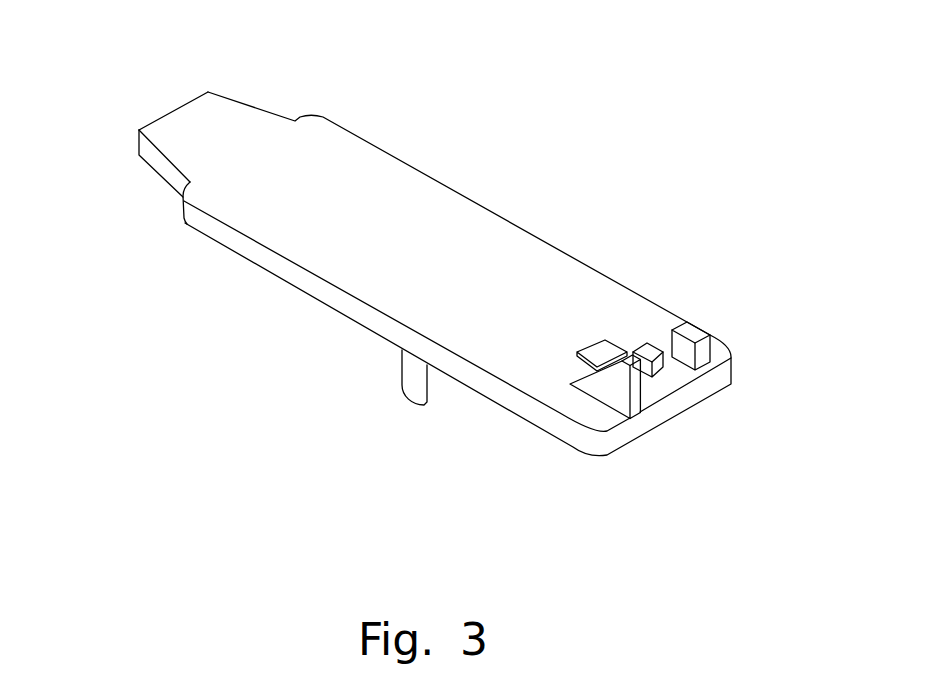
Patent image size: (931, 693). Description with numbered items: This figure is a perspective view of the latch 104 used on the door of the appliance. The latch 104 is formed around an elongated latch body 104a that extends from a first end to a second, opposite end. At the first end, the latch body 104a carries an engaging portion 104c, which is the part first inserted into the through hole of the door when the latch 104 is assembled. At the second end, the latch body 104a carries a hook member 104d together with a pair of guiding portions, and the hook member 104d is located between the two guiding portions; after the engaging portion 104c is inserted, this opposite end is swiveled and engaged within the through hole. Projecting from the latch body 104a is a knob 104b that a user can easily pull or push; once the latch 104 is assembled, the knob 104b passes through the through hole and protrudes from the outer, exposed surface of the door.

The latch 104 is at (457, 313).
The latch body 104a is at (530, 410).
The knob 104b is at (413, 387).
The engaging portion 104c is at (188, 126).
The hook member 104d is at (695, 392).